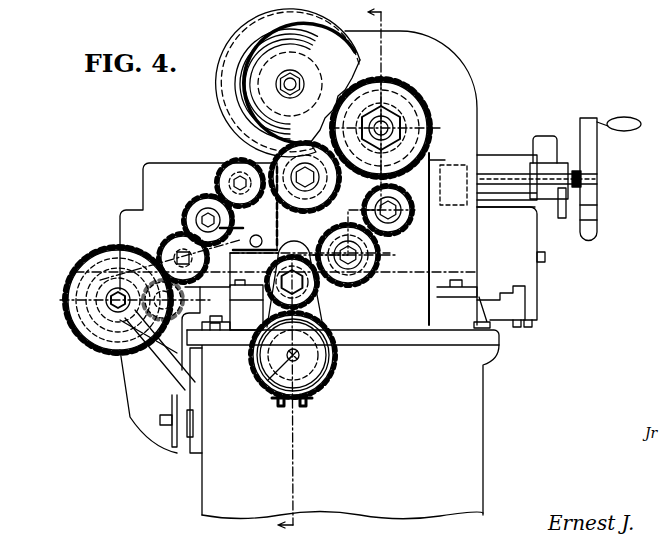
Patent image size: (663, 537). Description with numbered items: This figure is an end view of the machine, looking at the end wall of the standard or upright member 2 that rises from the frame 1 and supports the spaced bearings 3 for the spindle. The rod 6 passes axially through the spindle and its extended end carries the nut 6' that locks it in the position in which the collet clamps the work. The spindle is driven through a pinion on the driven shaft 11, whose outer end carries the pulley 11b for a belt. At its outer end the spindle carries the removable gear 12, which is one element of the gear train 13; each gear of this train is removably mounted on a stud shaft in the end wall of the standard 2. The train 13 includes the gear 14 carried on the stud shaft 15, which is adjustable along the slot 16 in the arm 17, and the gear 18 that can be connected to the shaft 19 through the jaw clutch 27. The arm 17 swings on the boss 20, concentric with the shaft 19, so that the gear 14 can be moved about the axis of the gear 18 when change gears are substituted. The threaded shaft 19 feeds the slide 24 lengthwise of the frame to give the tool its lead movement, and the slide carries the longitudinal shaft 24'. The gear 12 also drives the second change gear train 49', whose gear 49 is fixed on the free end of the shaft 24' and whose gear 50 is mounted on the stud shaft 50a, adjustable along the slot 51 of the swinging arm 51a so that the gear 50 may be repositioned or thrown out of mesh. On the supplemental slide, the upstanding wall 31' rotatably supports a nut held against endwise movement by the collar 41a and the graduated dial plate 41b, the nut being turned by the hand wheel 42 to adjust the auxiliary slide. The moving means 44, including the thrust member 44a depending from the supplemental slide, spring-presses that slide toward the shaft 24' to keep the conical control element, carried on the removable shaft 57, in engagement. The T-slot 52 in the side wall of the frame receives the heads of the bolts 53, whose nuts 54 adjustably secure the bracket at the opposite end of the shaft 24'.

The frame 1 is at (390, 335).
The standard or upright member 2 is at (276, 272).
The bearings 3 is at (430, 98).
The rod 6 is at (410, 128).
The nut 6' is at (407, 125).
The driven shaft 11 is at (291, 82).
The pulley 11b is at (259, 24).
The removable gear 12 is at (404, 80).
The gear train 13 is at (322, 214).
The gear 14 is at (320, 288).
The stud shaft 15 is at (273, 292).
The slot 16 is at (248, 335).
The arm 17 is at (322, 310).
The gear 18 is at (330, 370).
The shaft 19 is at (268, 378).
The boss 20 is at (330, 385).
The slide 24 is at (520, 267).
The shaft 24' is at (129, 381).
The clutch 27 is at (338, 358).
The upstanding wall 31' is at (537, 164).
The collar 41a is at (480, 157).
The dial plate 41b is at (557, 150).
The hand wheel 42 is at (592, 150).
The moving means 44 is at (570, 223).
The thrust member 44a is at (545, 257).
The removable gear 49 is at (122, 300).
The gear train 49' is at (226, 183).
The gear 50 is at (183, 244).
The stud shaft 50a is at (213, 324).
The slot 51 is at (205, 258).
The arm 51a is at (158, 252).
The T-slot 52 is at (202, 430).
The bolts 53 is at (190, 437).
The nuts 54 is at (165, 428).
The removable shaft 57 is at (172, 300).